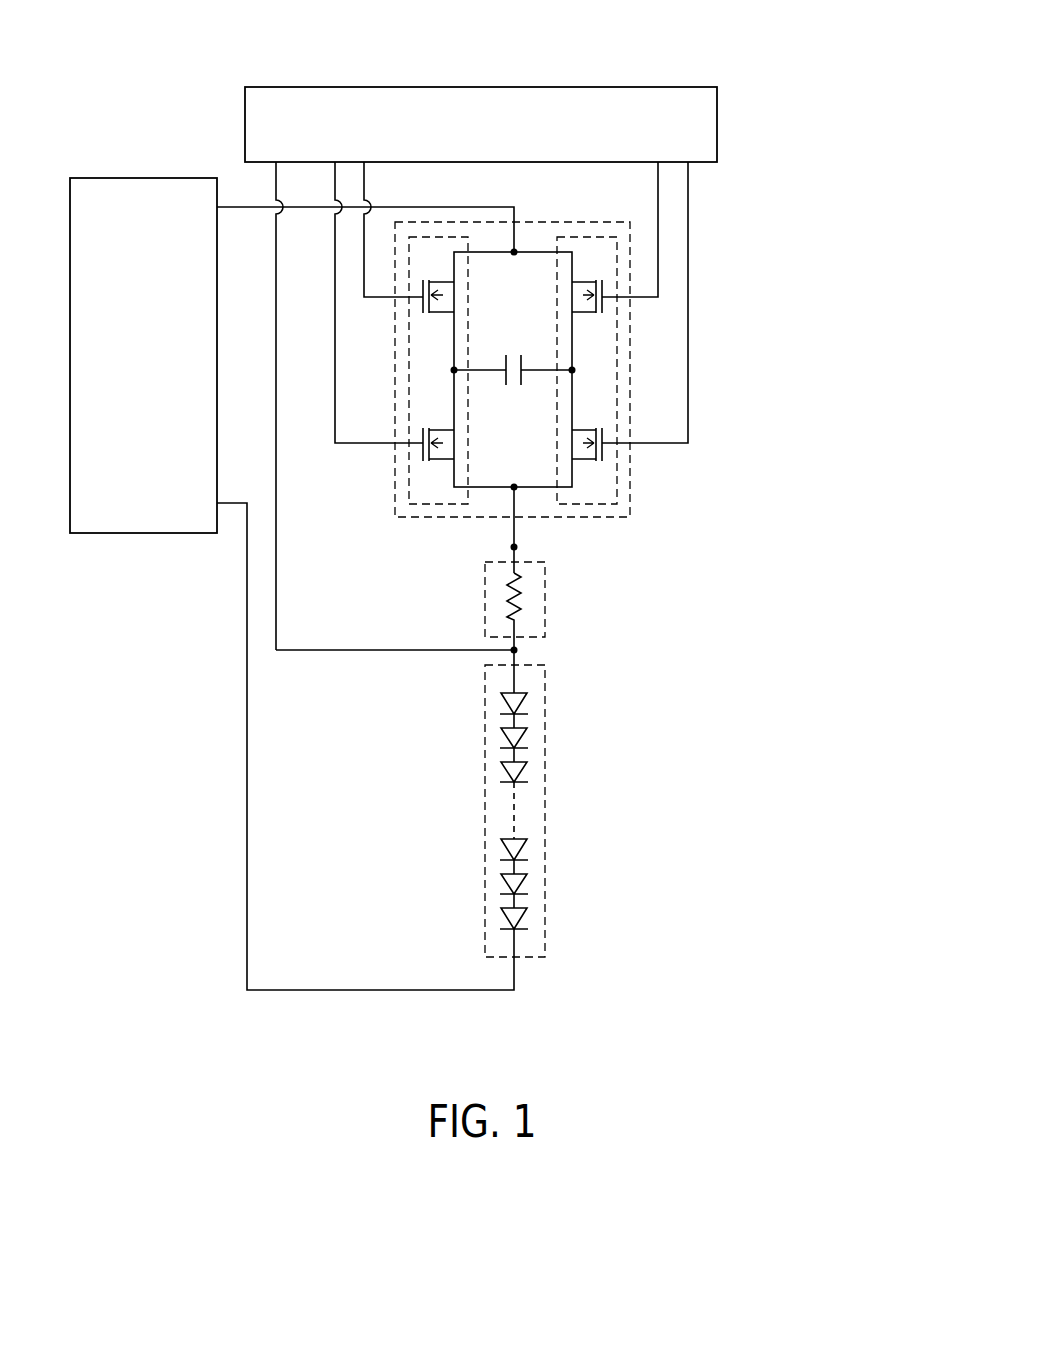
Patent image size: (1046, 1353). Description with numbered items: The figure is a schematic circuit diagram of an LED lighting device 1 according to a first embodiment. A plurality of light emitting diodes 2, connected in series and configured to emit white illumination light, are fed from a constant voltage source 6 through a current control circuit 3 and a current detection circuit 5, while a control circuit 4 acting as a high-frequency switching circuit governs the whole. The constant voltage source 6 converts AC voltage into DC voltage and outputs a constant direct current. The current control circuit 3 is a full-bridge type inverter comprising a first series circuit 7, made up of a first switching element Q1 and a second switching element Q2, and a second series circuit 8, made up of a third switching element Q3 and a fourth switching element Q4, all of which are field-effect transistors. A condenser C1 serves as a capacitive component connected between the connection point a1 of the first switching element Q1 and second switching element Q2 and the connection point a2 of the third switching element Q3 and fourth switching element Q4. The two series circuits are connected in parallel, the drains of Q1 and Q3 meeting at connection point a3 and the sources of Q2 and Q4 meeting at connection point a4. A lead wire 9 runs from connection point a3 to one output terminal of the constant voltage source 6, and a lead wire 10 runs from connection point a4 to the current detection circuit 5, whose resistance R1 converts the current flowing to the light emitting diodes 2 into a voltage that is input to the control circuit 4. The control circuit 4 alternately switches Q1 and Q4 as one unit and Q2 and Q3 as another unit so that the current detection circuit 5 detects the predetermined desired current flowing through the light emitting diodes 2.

The LED lighting device 1 is at (610, 46).
The light emitting diode 2 is at (546, 810).
The current control circuit 3 is at (511, 356).
The control circuit 4 is at (500, 87).
The current detection circuit 5 is at (509, 606).
The constant voltage source 6 is at (146, 178).
The first series circuit 7 is at (405, 335).
The second series circuit 8 is at (619, 343).
The lead wire 9 is at (471, 207).
The lead wire 10 is at (516, 527).
The first switching element Q1 is at (448, 312).
The second switching element Q2 is at (448, 460).
The third switching element Q3 is at (577, 312).
The fourth switching element Q4 is at (580, 460).
The condenser C1 is at (505, 360).
The resistance R1 is at (510, 597).
The connection point a1 is at (454, 370).
The connection point a2 is at (572, 370).
The connection point a3 is at (514, 252).
The connection point a4 is at (514, 487).